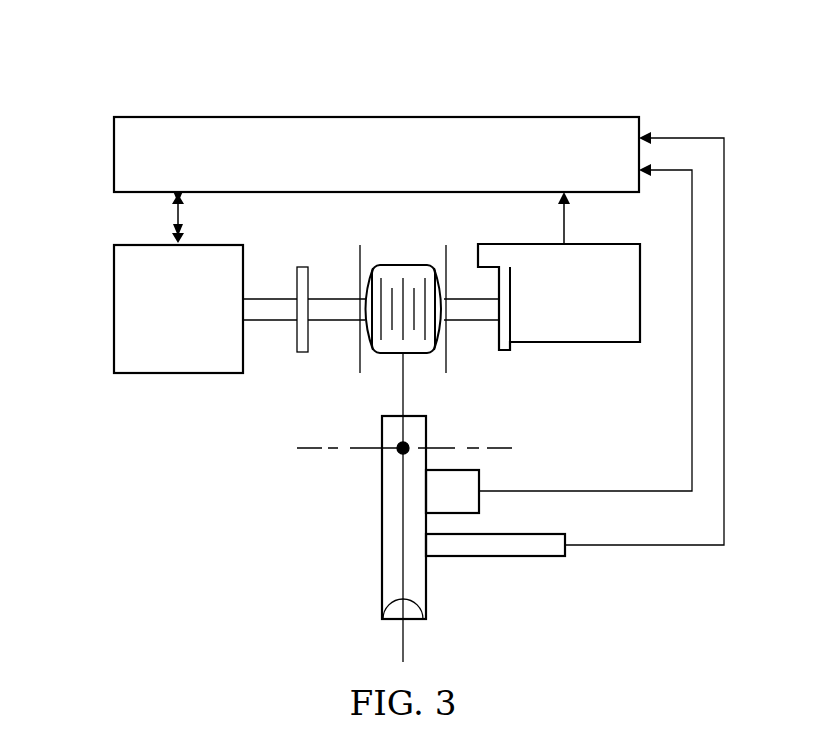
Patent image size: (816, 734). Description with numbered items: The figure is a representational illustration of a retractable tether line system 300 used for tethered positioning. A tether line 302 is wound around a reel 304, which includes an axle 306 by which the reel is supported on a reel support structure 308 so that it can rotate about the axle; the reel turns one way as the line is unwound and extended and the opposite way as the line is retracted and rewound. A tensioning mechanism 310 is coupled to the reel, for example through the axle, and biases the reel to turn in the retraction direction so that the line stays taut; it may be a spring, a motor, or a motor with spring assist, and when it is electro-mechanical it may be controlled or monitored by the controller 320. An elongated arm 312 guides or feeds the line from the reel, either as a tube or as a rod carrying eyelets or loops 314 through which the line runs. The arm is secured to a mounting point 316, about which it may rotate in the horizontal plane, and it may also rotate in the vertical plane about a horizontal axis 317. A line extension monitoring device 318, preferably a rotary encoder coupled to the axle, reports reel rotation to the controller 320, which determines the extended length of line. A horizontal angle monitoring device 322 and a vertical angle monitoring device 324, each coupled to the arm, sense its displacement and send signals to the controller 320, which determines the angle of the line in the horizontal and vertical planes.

The tether line system 300 is at (602, 90).
The tether line 302 is at (406, 641).
The reel 304 is at (359, 255).
The axle 306 is at (468, 322).
The reel support structure 308 is at (300, 353).
The tensioning mechanism 310 is at (158, 325).
The arm 312 is at (381, 535).
The eyelets or loops 314 is at (385, 592).
The mounting point 316 is at (398, 444).
The horizontal axis 317 is at (313, 452).
The line extension monitoring device 318 is at (553, 308).
The controller 320 is at (113, 153).
The horizontal angle monitoring device 322 is at (494, 558).
The vertical angle monitoring device 324 is at (481, 478).